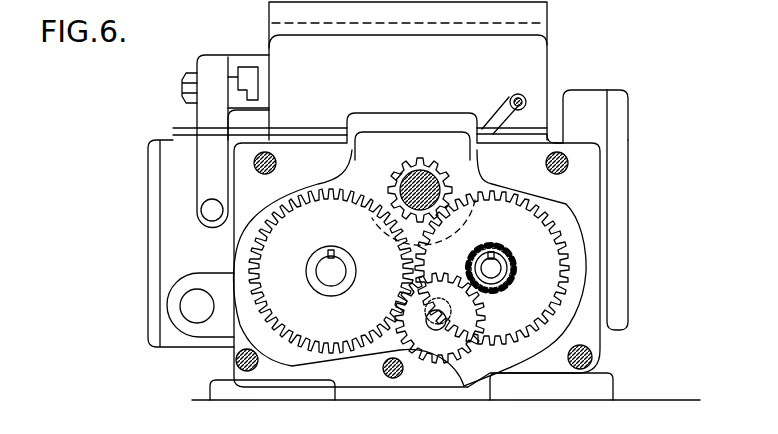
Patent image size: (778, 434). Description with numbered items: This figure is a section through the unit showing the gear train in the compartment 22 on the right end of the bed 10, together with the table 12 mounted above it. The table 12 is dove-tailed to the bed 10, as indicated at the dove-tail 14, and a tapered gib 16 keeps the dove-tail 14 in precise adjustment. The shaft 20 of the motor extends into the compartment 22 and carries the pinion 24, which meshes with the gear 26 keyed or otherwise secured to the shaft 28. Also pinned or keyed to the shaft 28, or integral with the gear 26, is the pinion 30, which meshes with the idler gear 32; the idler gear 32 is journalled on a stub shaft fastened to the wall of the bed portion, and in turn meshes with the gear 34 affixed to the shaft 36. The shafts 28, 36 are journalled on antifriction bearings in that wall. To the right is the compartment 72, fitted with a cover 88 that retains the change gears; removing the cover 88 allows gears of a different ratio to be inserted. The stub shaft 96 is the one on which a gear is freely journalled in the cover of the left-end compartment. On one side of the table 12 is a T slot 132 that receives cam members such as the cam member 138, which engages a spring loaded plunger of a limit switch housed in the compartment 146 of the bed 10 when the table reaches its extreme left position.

The main body or bed casting 10 is at (567, 177).
The carriage or table 12 is at (549, 54).
The dove-tail 14 is at (349, 102).
The tapered gib 16 is at (497, 106).
The shaft 20 is at (423, 188).
The compartment 22 is at (424, 138).
The pinion 24 is at (399, 173).
The gear 26 is at (547, 250).
The shaft 28 is at (491, 268).
The pinion 30 is at (498, 291).
The idler gear 32 is at (437, 360).
The gear 34 is at (310, 340).
The shaft 36 is at (327, 281).
The compartment 72 is at (596, 96).
The cover 88 is at (628, 148).
The stub shaft 96 is at (432, 325).
The T slot 132 is at (247, 68).
The cam member 138 is at (205, 145).
The compartment 146 is at (168, 256).